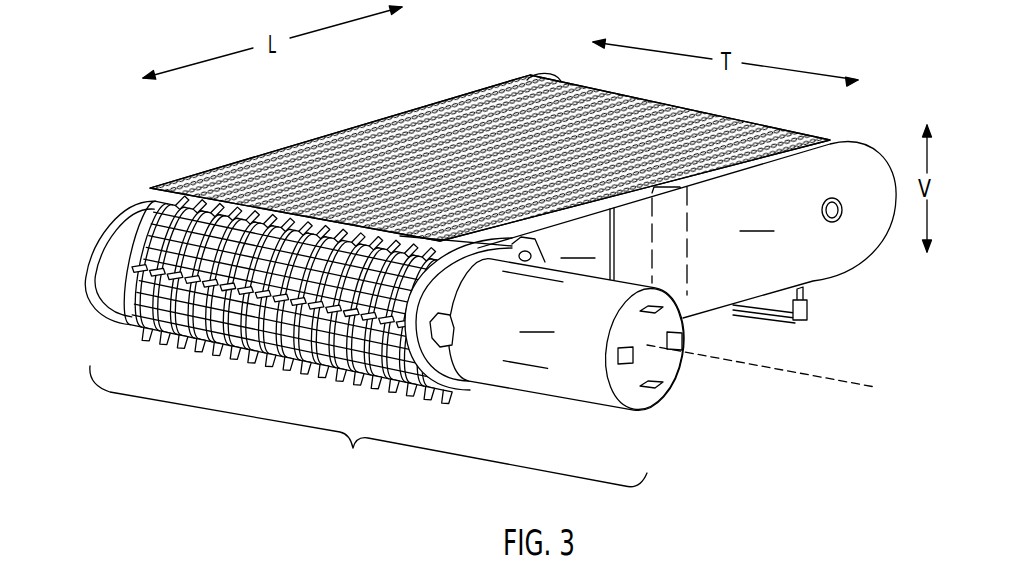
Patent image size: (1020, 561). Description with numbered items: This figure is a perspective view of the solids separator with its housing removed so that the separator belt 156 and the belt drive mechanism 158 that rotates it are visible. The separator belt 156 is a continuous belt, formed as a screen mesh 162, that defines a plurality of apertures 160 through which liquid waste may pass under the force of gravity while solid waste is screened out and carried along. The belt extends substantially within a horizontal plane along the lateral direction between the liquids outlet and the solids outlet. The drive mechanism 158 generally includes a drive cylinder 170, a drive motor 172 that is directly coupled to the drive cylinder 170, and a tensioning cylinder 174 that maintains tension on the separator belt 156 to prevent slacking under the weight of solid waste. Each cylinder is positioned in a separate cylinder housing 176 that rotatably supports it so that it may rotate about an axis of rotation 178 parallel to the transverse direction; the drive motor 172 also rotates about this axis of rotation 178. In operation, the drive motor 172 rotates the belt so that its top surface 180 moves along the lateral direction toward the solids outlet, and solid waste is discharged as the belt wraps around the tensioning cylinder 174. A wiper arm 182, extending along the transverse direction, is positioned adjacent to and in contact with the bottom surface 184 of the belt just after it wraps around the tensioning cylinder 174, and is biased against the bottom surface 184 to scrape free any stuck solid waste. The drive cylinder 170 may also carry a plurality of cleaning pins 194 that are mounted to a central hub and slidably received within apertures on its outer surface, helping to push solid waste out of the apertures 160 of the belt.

The separator belt 156 is at (522, 117).
The belt drive mechanism 158 is at (368, 426).
The apertures 160 is at (148, 235).
The screen mesh 162 is at (162, 212).
The drive cylinder 170 is at (224, 234).
The drive motor 172 is at (561, 335).
The tensioning cylinder 174 is at (858, 170).
The cylinder housing 176 is at (648, 268).
The axis of rotation 178 is at (847, 385).
The top surface 180 is at (473, 97).
The wiper arm 182 is at (807, 309).
The bottom surface 184 is at (717, 313).
The cleaning pins 194 is at (200, 345).